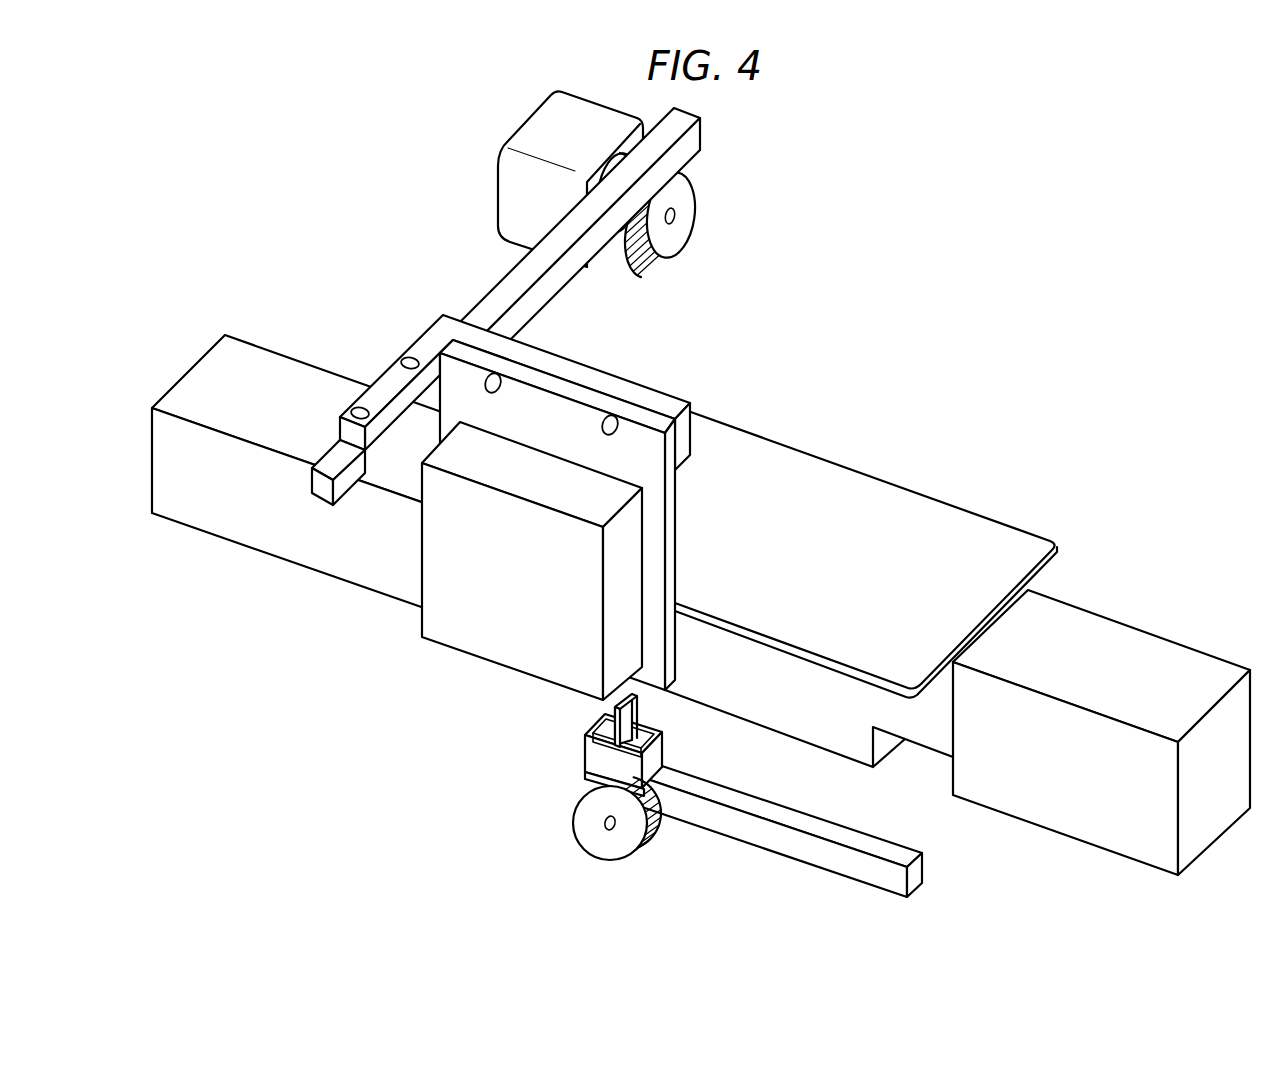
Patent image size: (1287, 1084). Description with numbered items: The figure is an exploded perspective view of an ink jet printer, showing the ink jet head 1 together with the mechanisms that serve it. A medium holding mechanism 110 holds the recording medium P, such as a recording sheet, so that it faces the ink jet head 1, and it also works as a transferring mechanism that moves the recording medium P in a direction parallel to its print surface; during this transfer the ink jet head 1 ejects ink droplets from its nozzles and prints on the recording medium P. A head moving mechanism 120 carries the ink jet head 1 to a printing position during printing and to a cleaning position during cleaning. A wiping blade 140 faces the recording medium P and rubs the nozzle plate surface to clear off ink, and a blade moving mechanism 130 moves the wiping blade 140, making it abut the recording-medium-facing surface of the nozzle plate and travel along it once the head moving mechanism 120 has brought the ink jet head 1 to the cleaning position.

The ink jet head 1 is at (446, 656).
The medium holding mechanism 110 is at (1130, 650).
The head moving mechanism 120 is at (490, 187).
The blade moving mechanism 130 is at (846, 883).
The wiping blade 140 is at (642, 715).
The recording medium P is at (847, 493).